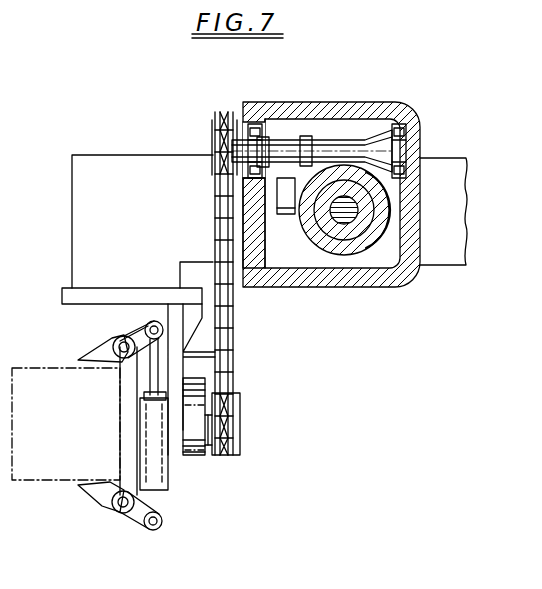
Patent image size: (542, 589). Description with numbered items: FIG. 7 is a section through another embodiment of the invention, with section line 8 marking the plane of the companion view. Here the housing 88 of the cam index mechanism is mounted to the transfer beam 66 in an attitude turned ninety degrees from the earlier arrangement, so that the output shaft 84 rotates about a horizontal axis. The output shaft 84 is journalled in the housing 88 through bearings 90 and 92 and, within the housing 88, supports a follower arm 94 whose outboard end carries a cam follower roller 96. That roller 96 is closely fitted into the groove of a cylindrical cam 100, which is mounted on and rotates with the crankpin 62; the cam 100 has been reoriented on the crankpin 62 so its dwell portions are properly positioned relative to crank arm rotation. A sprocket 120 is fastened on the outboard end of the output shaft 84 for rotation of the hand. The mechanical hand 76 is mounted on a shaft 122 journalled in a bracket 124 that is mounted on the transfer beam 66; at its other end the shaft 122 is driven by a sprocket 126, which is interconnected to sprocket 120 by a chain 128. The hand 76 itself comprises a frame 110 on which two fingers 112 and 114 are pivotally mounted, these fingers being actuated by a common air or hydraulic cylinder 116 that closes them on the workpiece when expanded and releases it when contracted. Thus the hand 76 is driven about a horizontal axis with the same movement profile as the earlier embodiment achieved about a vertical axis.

The section line 8- 8 is at (240, 100).
The crankpin 62 is at (360, 207).
The transfer beam 66 is at (470, 220).
The mechanical hand 76 is at (104, 340).
The output shaft 84 is at (322, 148).
The housing 88 is at (420, 283).
The bearing 90 is at (412, 132).
The bearing 92 is at (240, 128).
The follower arm 94 is at (286, 215).
The cam follower roller 96 is at (312, 274).
The cylindrical cam 100 is at (385, 242).
The frame 110 is at (160, 498).
The finger 112 is at (95, 358).
The finger 114 is at (112, 496).
The air or hydraulic cylinder 116 is at (168, 486).
The sprocket 120 is at (215, 148).
The shaft 122 is at (210, 428).
The bracket 124 is at (215, 355).
The sprocket 126 is at (242, 441).
The chain 128 is at (236, 320).